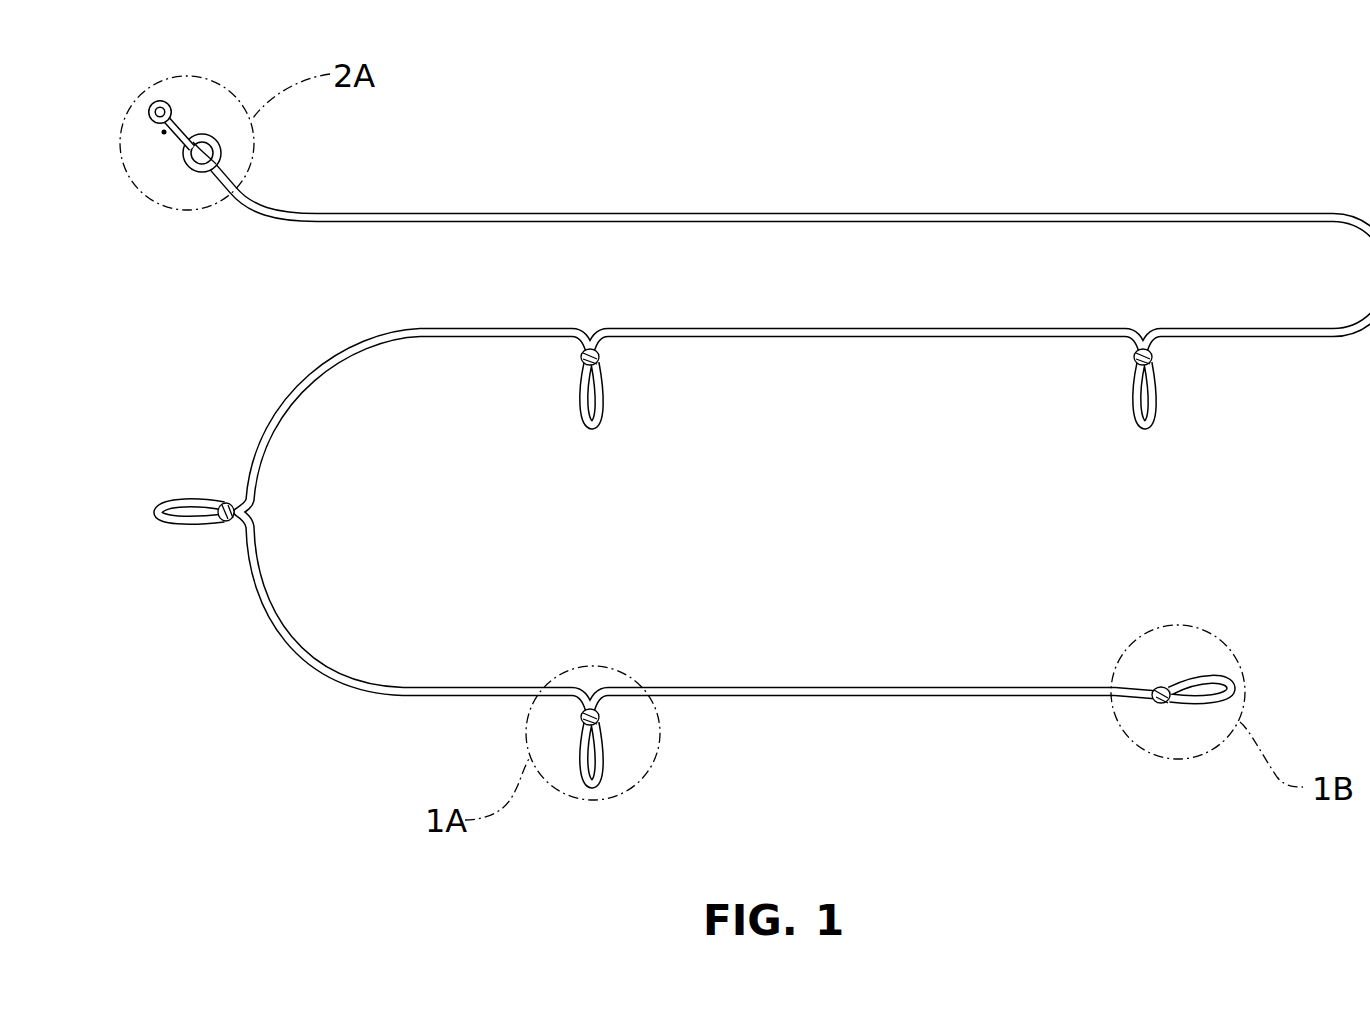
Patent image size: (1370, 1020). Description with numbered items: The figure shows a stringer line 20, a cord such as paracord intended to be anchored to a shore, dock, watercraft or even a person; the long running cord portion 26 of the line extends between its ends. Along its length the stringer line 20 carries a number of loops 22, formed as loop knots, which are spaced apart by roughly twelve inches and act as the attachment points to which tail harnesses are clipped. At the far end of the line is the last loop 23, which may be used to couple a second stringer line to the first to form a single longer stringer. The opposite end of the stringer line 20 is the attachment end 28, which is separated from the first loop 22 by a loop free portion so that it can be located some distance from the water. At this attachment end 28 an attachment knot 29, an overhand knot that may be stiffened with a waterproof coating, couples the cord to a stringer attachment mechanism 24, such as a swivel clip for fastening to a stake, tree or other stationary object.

The stringer line 20 is at (780, 392).
The loop 22 is at (604, 426).
The last loop 23 is at (1213, 676).
The stringer attachment mechanism 24 is at (187, 142).
The main line 26 is at (437, 212).
The attachment end 28 is at (223, 178).
The attachment knot 29 is at (220, 160).